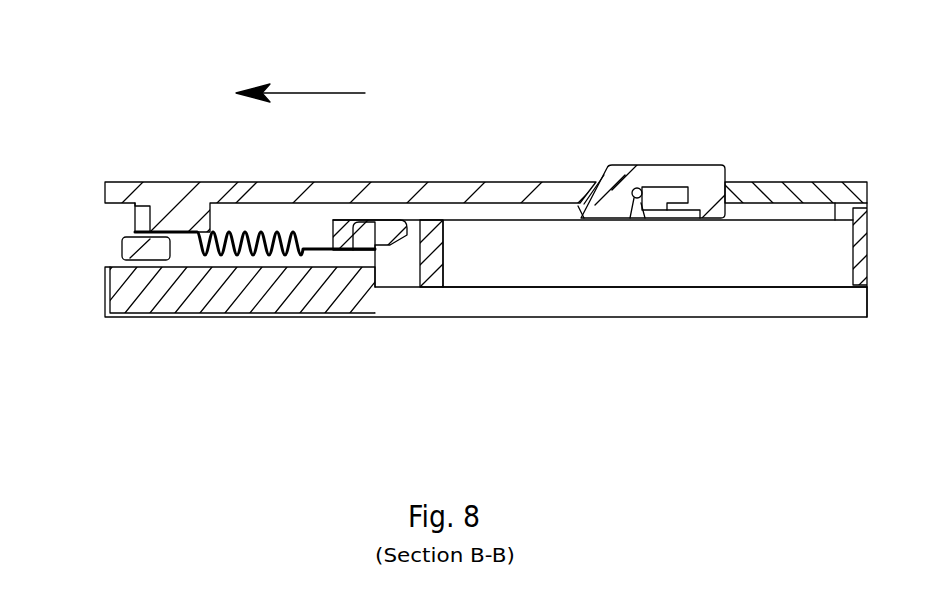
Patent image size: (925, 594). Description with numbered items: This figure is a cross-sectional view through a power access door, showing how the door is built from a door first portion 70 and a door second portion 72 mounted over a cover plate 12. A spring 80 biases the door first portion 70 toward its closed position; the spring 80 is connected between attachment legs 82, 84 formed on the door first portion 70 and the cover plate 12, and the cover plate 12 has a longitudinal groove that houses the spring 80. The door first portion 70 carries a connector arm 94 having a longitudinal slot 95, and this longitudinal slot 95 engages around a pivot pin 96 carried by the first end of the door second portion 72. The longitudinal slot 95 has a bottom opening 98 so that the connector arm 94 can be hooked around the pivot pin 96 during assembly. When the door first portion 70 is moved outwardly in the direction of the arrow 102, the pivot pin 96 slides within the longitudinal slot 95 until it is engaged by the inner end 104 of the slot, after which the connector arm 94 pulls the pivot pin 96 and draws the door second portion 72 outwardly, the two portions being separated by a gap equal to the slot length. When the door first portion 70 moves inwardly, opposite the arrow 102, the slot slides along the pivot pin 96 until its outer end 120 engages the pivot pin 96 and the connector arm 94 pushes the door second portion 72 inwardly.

The cover plate 12 is at (150, 300).
The door first portion 70 is at (300, 188).
The door second portion 72 is at (790, 192).
The spring 80 is at (243, 250).
The attachment leg 82 is at (132, 251).
The attachment leg 84 is at (377, 247).
The connector arm 94 is at (657, 187).
The longitudinal slot 95 is at (676, 186).
The pivot pin 96 is at (637, 186).
The bottom opening 98 is at (653, 215).
The arrow 102 is at (318, 93).
The inner end 104 is at (694, 175).
The outer end 120 is at (598, 192).